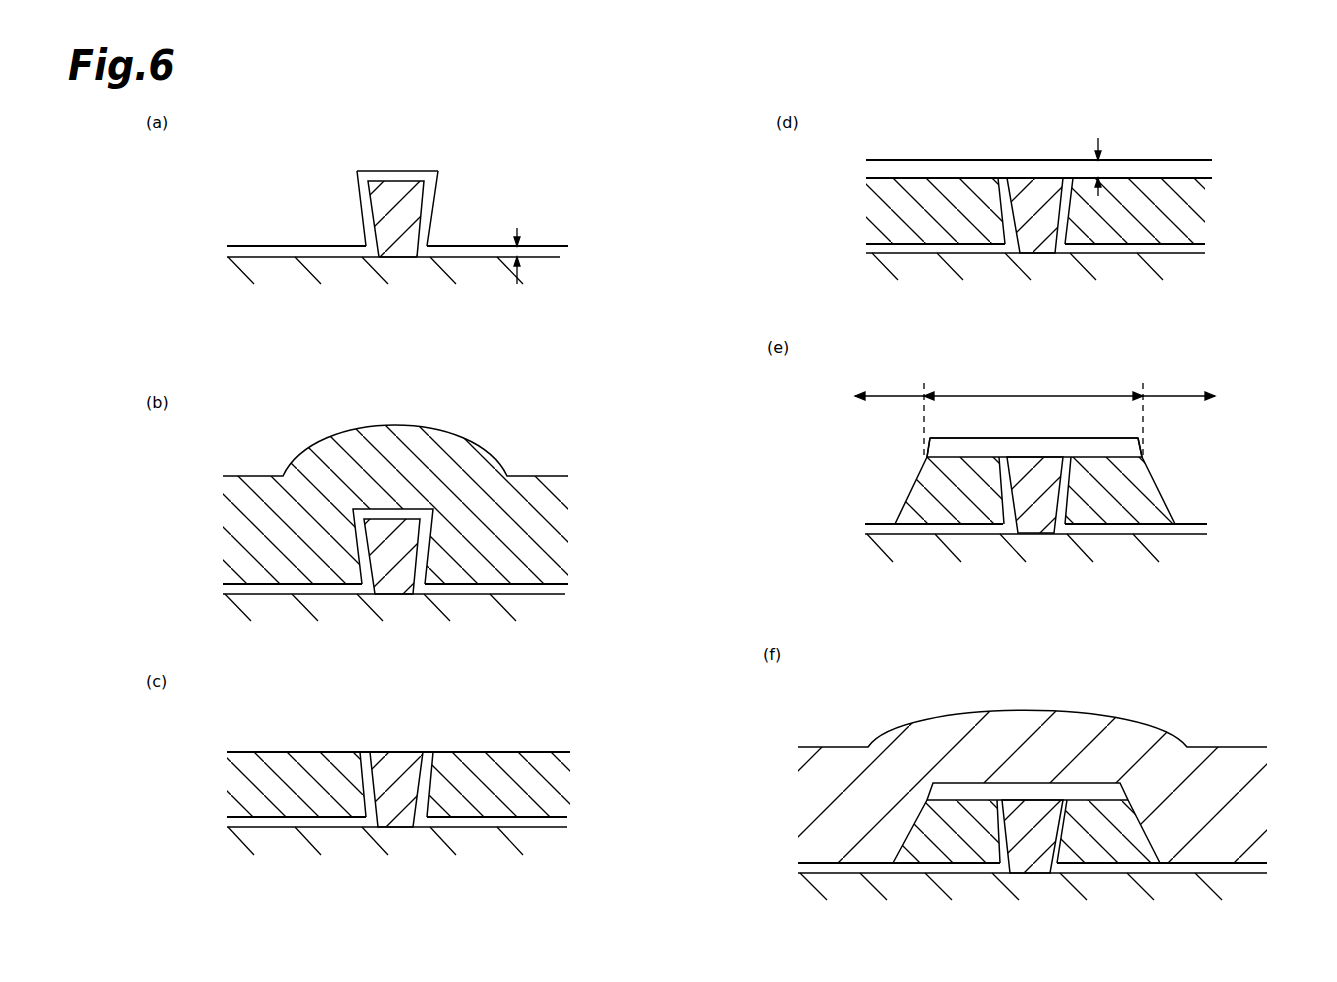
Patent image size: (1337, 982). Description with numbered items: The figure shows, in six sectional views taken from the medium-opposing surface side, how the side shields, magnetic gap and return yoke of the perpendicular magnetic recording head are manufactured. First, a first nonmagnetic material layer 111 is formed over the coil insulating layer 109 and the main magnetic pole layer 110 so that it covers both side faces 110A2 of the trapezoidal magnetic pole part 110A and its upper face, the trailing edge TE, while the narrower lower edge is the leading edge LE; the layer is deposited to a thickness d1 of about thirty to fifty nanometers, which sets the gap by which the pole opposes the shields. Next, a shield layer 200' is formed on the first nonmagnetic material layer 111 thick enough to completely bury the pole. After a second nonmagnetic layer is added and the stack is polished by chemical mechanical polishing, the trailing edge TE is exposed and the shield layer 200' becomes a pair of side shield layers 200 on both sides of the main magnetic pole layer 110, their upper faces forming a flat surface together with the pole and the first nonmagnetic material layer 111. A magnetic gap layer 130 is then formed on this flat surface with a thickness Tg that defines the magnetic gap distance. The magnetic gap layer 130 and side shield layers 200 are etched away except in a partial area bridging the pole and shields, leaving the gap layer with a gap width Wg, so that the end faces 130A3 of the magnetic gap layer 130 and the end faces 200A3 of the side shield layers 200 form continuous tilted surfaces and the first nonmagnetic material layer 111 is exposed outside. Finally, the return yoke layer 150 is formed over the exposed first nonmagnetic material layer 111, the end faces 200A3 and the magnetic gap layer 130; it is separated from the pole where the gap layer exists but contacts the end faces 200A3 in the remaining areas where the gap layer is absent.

The coil insulating layer 109 is at (553, 270).
The first nonmagnetic material layer 111 is at (553, 252).
The main magnetic pole layer 110 is at (393, 206).
The magnetic pole part 110A is at (401, 185).
The side faces 110A2 is at (372, 226).
The trailing edge TE is at (410, 173).
The leading edge LE is at (398, 259).
The thickness d1 is at (520, 250).
The shield layer 200' is at (395, 498).
The side shield layers 200 is at (719, 552).
The magnetic gap layer 130 is at (951, 172).
The thickness Tg is at (1100, 170).
The gap width Wg is at (1034, 420).
The end faces 130A3 is at (925, 450).
The end faces 200A3 is at (910, 490).
The return yoke layer 150 is at (910, 757).